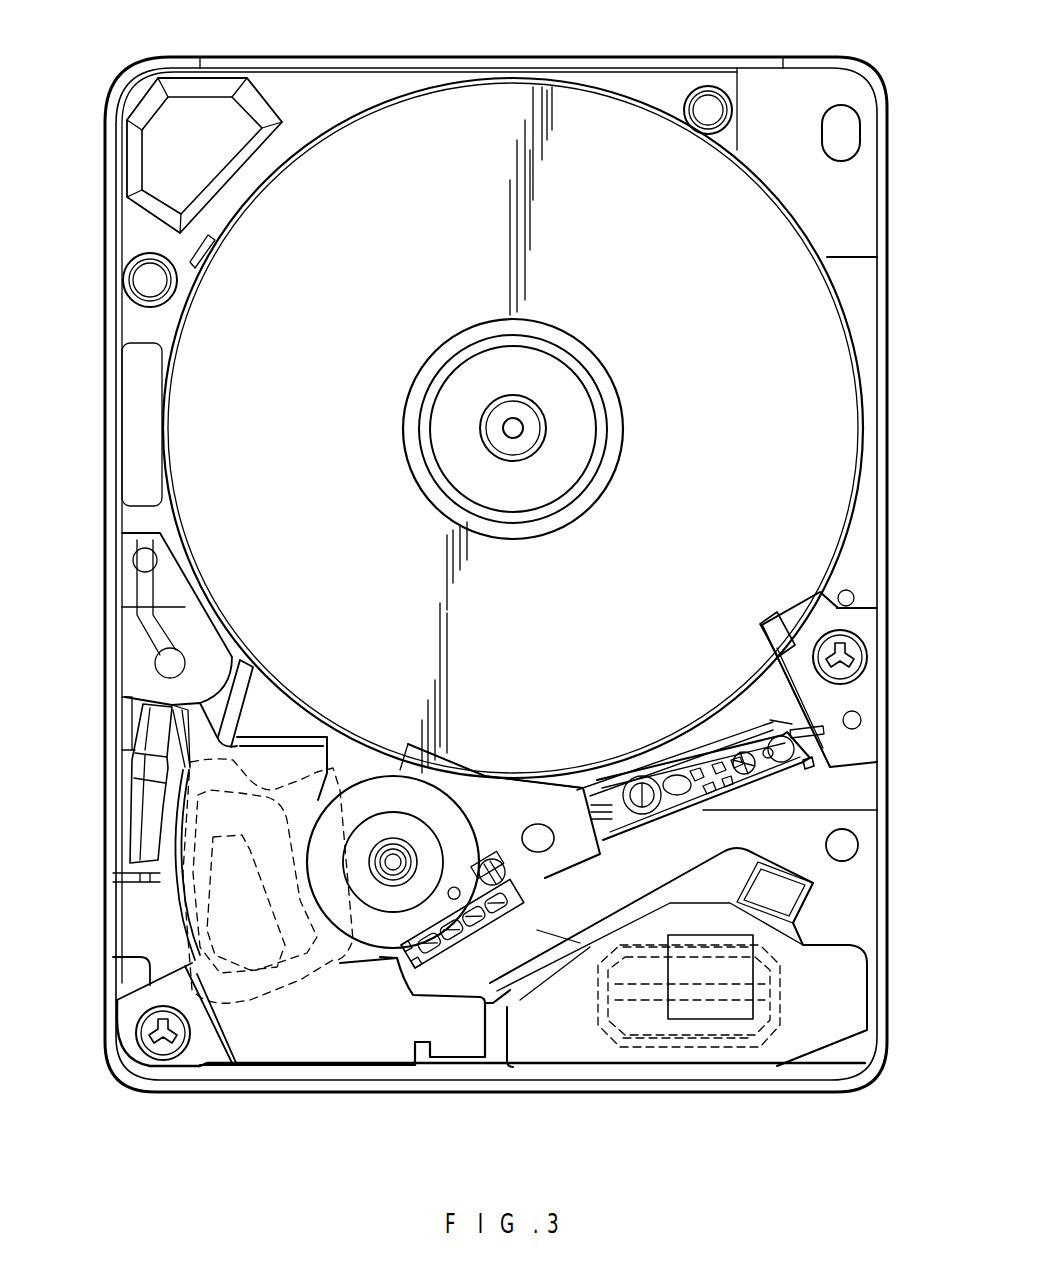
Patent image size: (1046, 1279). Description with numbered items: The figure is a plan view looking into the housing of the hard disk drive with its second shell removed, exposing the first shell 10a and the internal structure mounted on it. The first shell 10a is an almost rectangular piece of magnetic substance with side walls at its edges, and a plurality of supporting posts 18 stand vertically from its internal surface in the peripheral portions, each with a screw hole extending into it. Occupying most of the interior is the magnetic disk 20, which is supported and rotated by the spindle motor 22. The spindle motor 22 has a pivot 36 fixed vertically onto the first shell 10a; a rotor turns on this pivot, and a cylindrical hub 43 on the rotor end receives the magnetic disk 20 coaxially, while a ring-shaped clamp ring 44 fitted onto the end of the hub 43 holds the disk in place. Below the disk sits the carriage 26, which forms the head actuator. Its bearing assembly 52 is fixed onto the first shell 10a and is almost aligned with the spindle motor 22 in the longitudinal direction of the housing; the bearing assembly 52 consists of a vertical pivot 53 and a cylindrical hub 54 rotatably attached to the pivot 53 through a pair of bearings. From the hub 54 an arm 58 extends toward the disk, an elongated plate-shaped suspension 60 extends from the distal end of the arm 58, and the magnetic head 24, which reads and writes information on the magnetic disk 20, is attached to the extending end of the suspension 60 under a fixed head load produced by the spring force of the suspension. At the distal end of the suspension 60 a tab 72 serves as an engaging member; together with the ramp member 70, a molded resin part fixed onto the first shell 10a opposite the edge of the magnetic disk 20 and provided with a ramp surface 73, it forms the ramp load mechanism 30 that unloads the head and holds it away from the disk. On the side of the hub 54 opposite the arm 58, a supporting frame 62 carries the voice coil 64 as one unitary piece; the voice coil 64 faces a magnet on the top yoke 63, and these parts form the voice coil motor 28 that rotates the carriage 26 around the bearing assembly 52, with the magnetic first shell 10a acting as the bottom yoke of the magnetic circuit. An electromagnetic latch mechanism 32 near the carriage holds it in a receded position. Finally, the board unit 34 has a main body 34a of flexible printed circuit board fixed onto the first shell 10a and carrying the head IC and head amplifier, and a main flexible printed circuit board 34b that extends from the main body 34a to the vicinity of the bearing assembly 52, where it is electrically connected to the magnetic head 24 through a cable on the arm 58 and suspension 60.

The first shell 10a is at (332, 82).
The supporting posts 18 is at (708, 110).
The magnetic disk 20 is at (848, 355).
The spindle motor 22 is at (570, 312).
The hub 43 is at (483, 365).
The clamp ring 44 is at (608, 380).
The pivot 36 is at (503, 428).
The ramp member 70 is at (800, 605).
The ramp surface 73 is at (768, 614).
The ramp load mechanism 30 is at (855, 695).
The magnetic head 24 is at (758, 718).
The tab 72 is at (808, 764).
The suspension 60 is at (662, 775).
The arm 58 is at (535, 800).
The carriage 26 is at (505, 802).
The pivot 53 is at (403, 853).
The bearing assembly 52 is at (398, 792).
The hub 54 is at (376, 812).
The electromagnetic latch mechanism 32 is at (145, 815).
The supporting frame 62 is at (347, 967).
The voice coil 64 is at (247, 983).
The voice coil motor 28 is at (288, 1030).
The top yoke 63 is at (398, 1048).
The board unit 34 is at (668, 1048).
The main body 34a is at (718, 1050).
The main flexible printed circuit board 34b is at (615, 912).